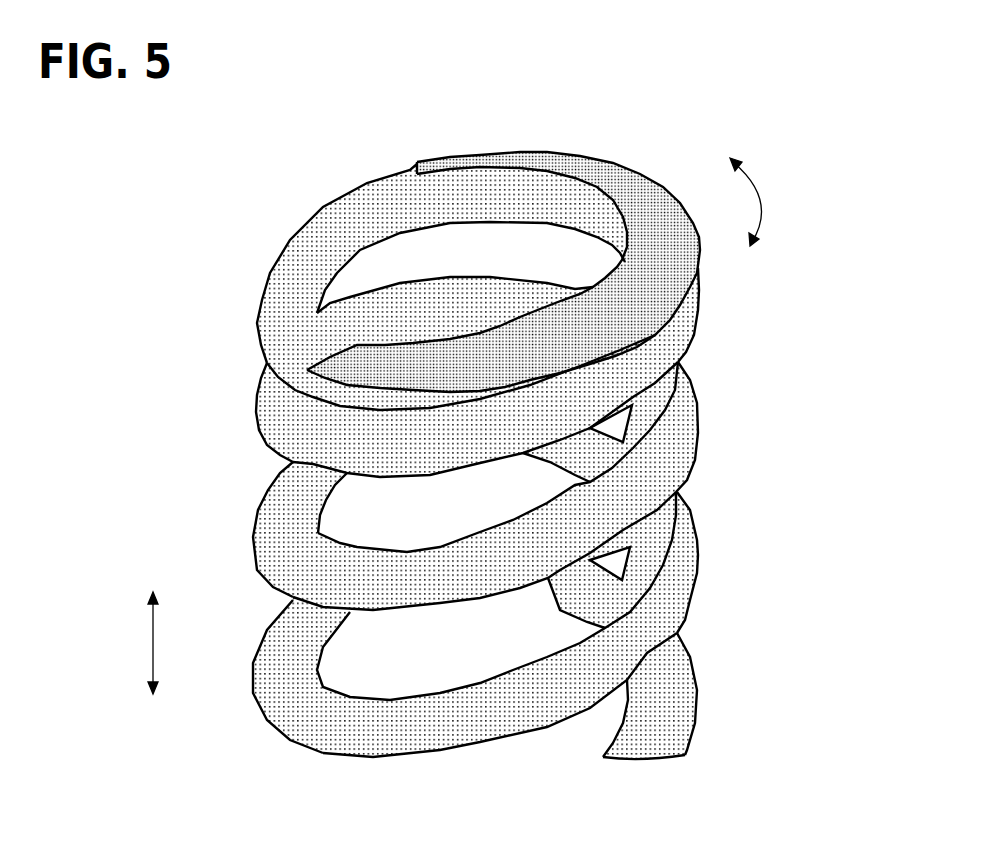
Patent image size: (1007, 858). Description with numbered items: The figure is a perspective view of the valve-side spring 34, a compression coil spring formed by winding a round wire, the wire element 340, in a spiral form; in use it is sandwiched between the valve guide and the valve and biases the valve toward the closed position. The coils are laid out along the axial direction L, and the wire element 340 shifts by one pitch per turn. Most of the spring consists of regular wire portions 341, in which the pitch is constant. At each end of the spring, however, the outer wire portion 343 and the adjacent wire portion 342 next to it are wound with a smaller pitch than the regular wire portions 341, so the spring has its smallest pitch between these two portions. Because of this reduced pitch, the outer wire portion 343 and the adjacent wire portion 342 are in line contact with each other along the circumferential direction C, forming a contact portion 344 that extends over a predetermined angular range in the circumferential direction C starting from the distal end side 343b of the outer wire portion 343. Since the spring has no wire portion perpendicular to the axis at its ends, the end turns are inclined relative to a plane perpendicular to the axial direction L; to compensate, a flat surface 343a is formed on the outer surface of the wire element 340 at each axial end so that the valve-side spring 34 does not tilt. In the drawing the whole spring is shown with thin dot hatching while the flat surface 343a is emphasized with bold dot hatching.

The valve-side spring 34 is at (297, 190).
The wire element 340 is at (260, 510).
The regular wire portion 341 is at (680, 548).
The adjacent wire portion 342 is at (630, 367).
The outer wire portion 343 is at (280, 290).
The flat surface 343a is at (607, 165).
The distal end side 343b is at (417, 162).
The contact portion 344 is at (672, 302).
The circumferential direction C is at (759, 202).
The axial direction L is at (141, 643).